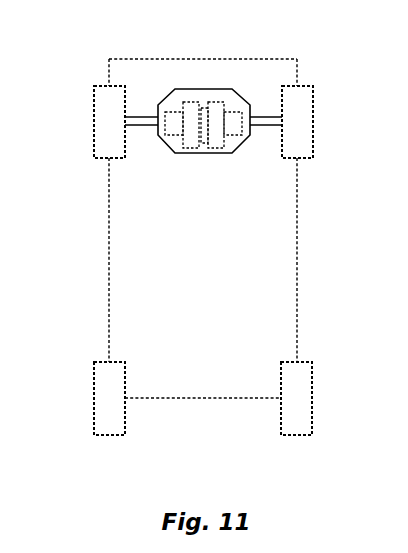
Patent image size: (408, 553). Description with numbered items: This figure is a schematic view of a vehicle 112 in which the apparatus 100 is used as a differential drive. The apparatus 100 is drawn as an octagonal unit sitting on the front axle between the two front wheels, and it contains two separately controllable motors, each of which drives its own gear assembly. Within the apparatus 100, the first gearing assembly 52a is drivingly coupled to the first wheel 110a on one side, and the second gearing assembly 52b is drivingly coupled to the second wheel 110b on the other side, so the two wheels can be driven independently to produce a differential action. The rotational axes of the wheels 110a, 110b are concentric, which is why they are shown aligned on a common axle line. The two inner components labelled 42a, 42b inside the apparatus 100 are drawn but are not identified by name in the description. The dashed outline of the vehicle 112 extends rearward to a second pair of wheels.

The apparatus 100 is at (204, 117).
The gearing assembly 52a is at (172, 110).
The gearing assembly 52b is at (228, 110).
The first rotating electric machine 42a is at (192, 154).
The second rotating electric machine 42b is at (217, 154).
The first wheel 110a is at (94, 113).
The second wheel 110b is at (313, 118).
The vehicle 112 is at (123, 263).